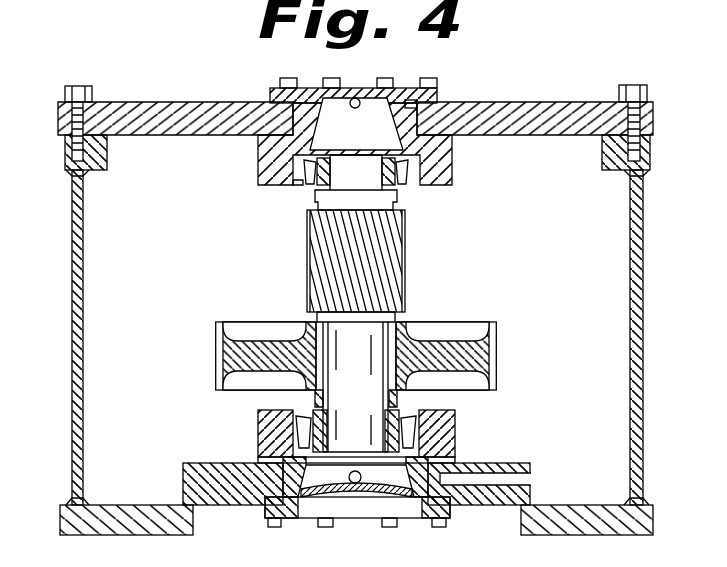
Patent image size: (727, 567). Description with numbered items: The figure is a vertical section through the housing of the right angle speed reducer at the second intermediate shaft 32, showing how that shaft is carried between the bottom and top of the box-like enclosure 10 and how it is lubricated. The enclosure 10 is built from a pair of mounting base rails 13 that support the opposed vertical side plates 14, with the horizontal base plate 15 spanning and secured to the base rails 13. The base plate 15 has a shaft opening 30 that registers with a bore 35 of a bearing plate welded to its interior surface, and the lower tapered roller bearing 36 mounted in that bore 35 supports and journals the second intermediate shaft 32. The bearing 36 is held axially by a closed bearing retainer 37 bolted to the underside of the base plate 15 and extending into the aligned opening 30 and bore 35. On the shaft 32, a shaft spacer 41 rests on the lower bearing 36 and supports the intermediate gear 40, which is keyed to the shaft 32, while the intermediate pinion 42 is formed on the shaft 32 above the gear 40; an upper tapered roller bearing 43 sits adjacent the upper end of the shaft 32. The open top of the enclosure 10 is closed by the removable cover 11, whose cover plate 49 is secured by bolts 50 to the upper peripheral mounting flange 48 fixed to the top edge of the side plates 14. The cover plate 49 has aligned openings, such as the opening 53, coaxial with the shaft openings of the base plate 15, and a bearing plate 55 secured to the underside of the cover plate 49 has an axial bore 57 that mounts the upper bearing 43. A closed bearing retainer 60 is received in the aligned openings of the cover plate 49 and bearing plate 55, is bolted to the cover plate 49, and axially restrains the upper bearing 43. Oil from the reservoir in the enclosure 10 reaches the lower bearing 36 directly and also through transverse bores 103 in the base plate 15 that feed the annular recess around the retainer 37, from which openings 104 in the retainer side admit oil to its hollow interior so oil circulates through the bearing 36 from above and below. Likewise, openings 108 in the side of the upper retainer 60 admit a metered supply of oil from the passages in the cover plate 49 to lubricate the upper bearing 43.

The box-like enclosure 10 is at (354, 303).
The removable cover 11 is at (350, 136).
The mounting base rails 13 is at (80, 523).
The vertical side plates 14 is at (72, 268).
The horizontal base plate 15 is at (233, 497).
The shaft opening 30 is at (357, 507).
The second intermediate shaft 32 is at (378, 205).
The bore of the bearing plate 35 is at (430, 410).
The lower tapered roller bearing 36 is at (300, 410).
The closed bearing retainer 37 is at (370, 490).
The intermediate gear 40 is at (498, 352).
The shaft spacer 41 is at (400, 397).
The intermediate pinion 42 is at (315, 258).
The upper tapered roller bearing 43 is at (402, 188).
The upper peripheral mounting flange 48 is at (67, 159).
The cover plate 49 is at (173, 103).
The bolts 50 is at (75, 113).
The opening in the cover plate 53 is at (407, 105).
The bearing plate 55 is at (443, 160).
The axial bore of the bearing plate 57 is at (302, 188).
The closed bearing retainer 60 is at (312, 88).
The transverse bores 103 is at (532, 475).
The openings in the bearing retainers 104 is at (349, 477).
The openings in the bearing retainers 108 is at (352, 107).